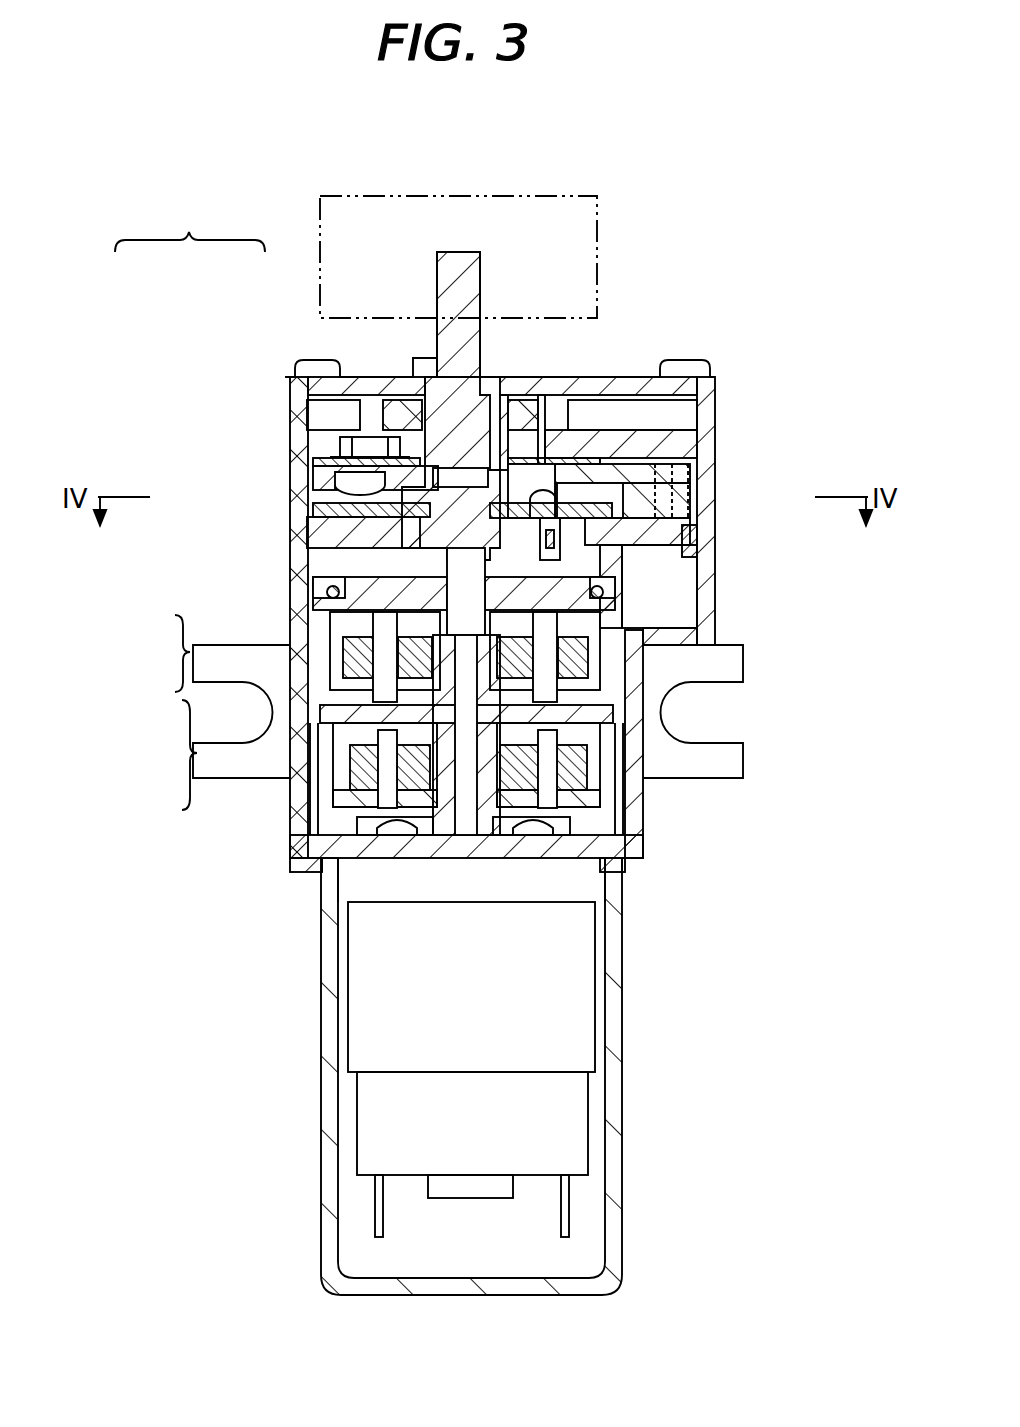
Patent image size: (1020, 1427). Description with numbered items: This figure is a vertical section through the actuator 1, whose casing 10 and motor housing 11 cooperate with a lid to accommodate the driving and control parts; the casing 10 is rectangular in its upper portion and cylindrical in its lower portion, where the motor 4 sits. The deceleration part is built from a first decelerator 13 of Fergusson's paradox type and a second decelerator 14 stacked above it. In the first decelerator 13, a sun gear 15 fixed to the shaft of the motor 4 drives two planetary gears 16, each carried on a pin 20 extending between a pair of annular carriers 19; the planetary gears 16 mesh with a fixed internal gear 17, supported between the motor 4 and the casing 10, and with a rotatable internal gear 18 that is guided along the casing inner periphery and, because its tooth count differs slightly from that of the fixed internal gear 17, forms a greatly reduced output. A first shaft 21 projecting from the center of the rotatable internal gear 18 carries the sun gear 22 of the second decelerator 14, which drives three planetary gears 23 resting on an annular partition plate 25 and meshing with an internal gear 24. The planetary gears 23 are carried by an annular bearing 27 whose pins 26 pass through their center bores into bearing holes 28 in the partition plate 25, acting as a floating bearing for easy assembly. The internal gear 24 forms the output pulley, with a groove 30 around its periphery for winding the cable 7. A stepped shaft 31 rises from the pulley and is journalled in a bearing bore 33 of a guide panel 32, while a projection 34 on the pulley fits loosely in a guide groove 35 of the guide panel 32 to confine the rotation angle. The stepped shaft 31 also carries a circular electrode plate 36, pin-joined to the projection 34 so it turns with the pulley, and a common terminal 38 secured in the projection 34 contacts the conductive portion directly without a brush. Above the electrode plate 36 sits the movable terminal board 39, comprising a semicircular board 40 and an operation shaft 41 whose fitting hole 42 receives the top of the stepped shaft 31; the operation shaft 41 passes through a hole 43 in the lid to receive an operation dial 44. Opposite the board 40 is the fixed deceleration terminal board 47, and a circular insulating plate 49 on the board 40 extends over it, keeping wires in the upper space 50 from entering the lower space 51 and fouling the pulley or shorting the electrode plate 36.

The actuator 1 is at (300, 1290).
The motor 4 is at (560, 1120).
The cable 7 is at (625, 586).
The casing 10 is at (640, 790).
The motor housing 11 is at (598, 1288).
The first decelerator 13 is at (440, 727).
The second decelerator 14 is at (211, 696).
The sun gear 15 is at (505, 838).
The planetary gears 16 is at (615, 880).
The fixed internal gear 17 is at (625, 858).
The rotatable internal gear 18 is at (335, 868).
The carriers 19 is at (450, 840).
The pin 20 is at (355, 885).
The first shaft 21 is at (655, 750).
The sun gear 22 is at (620, 690).
The planetary gears 23 is at (560, 660).
The internal gear 24 is at (620, 616).
The partition plate 25 is at (345, 722).
The pins 26 is at (390, 630).
The annular bearing 27 is at (298, 540).
The bearing holes 28 is at (340, 805).
The groove 30 is at (324, 590).
The stepped shaft 31 is at (335, 458).
The guide panel 32 is at (700, 540).
The bearing bore 33 is at (435, 498).
The projection 34 is at (665, 500).
The guide groove 35 is at (655, 525).
The electrode plate 36 is at (590, 440).
The common terminal 38 is at (575, 412).
The movable terminal board 39 is at (190, 225).
The semicircular board 40 is at (298, 520).
The operation shaft 41 is at (435, 348).
The fitting hole 42 is at (442, 370).
The hole 43 is at (486, 476).
The operation dial 44 is at (433, 222).
The deceleration terminal board 47 is at (673, 448).
The insulating plate 49 is at (600, 460).
The upper space 50 is at (548, 440).
The lower space 51 is at (535, 425).